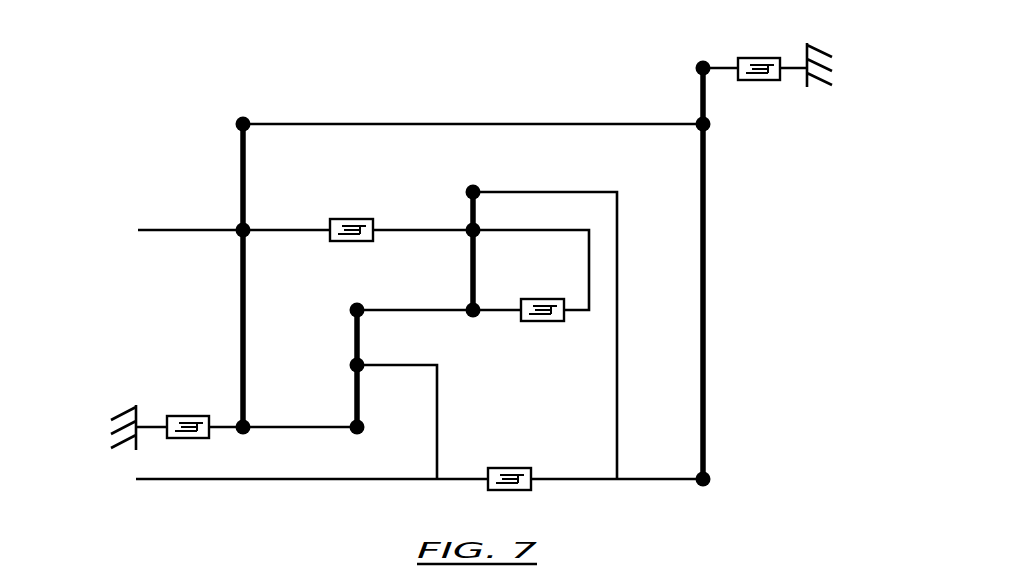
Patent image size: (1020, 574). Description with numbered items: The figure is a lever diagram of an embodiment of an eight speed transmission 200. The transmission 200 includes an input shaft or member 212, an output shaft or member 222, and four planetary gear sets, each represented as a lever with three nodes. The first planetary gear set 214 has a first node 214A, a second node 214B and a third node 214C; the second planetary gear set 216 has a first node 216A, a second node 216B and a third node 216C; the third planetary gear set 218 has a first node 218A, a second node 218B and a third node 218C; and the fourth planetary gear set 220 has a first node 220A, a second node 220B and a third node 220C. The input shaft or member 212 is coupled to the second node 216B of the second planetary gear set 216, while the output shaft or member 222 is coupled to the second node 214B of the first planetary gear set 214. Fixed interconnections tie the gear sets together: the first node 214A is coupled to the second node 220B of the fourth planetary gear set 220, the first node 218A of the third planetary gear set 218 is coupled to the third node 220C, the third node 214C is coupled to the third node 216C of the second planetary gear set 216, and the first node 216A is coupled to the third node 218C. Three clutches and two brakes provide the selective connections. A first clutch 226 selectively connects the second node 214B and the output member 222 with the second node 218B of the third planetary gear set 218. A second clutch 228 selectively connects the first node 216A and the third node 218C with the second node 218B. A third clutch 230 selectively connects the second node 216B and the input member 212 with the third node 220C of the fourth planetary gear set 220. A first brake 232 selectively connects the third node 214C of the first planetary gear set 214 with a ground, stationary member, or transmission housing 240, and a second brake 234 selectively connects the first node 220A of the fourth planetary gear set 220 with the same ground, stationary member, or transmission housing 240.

The eight speed transmission 200 is at (443, 96).
The input shaft or member 212 is at (193, 480).
The first planetary gear set 214 is at (221, 130).
The first node of the first planetary gear set 214A is at (275, 100).
The second node of the first planetary gear set 214B is at (250, 227).
The third node of the first planetary gear set 214C is at (249, 432).
The second planetary gear set 216 is at (369, 385).
The first node of the second planetary gear set 216A is at (352, 304).
The second node of the second planetary gear set 216B is at (351, 362).
The third node of the second planetary gear set 216C is at (351, 422).
The third planetary gear set 218 is at (475, 334).
The first node of the third planetary gear set 218A is at (478, 190).
The second node of the third planetary gear set 218B is at (478, 234).
The third node of the third planetary gear set 218C is at (468, 303).
The fourth planetary gear set 220 is at (684, 376).
The first node of the fourth planetary gear set 220A is at (699, 70).
The second node of the fourth planetary gear set 220B is at (699, 131).
The third node of the fourth planetary gear set 220C is at (710, 476).
The output shaft or member 222 is at (158, 229).
The first clutch 226 is at (366, 219).
The second clutch 228 is at (548, 325).
The third clutch 230 is at (503, 468).
The first brake 232 is at (185, 414).
The second brake 234 is at (750, 82).
The transmission housing 240 is at (118, 404).